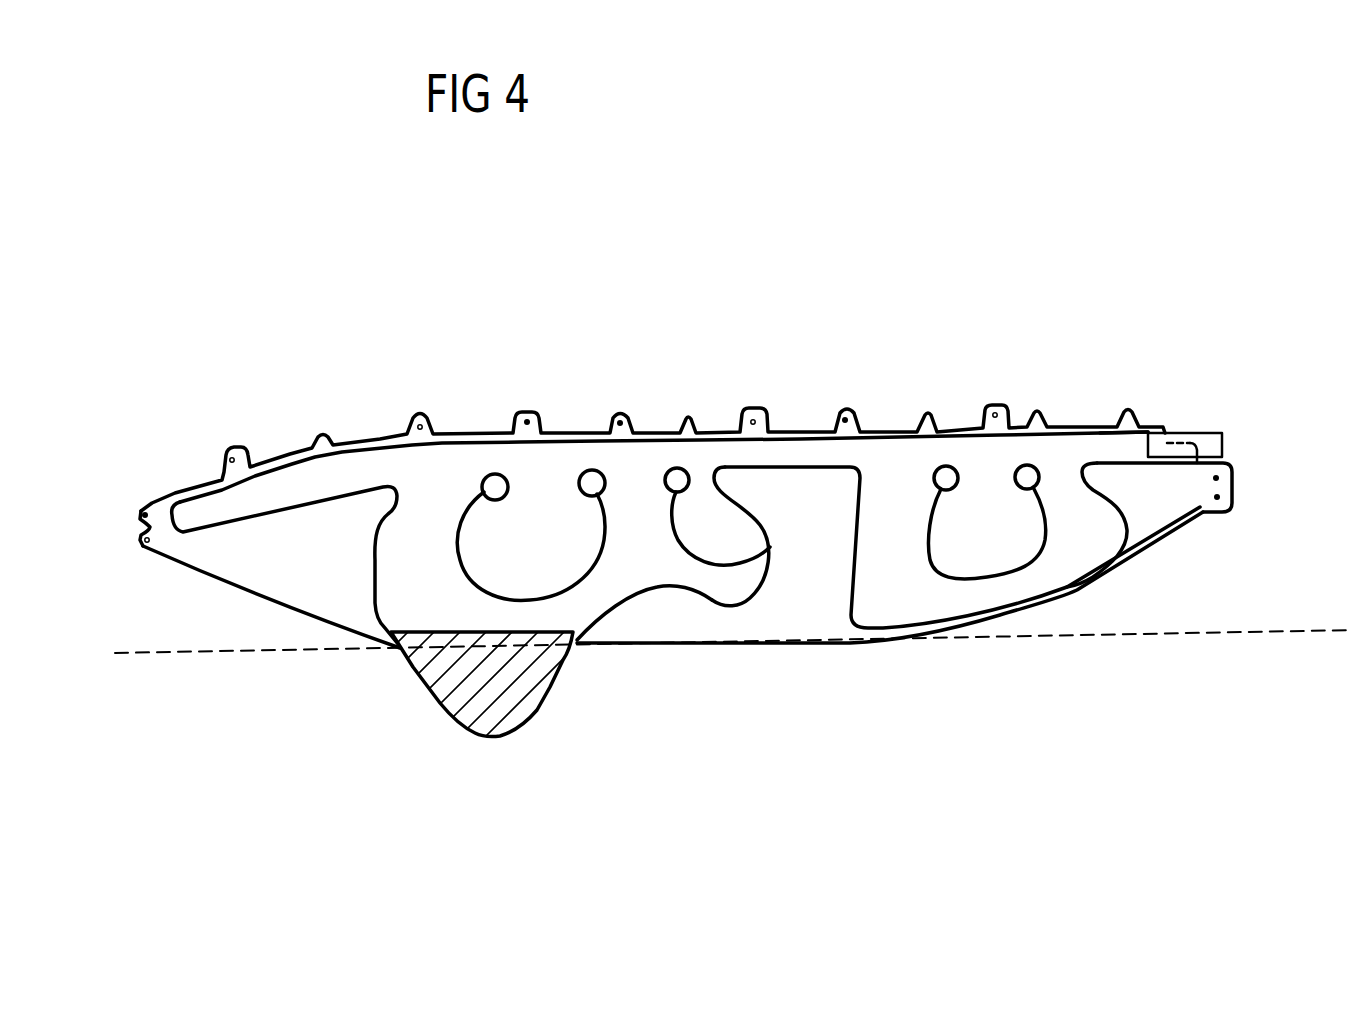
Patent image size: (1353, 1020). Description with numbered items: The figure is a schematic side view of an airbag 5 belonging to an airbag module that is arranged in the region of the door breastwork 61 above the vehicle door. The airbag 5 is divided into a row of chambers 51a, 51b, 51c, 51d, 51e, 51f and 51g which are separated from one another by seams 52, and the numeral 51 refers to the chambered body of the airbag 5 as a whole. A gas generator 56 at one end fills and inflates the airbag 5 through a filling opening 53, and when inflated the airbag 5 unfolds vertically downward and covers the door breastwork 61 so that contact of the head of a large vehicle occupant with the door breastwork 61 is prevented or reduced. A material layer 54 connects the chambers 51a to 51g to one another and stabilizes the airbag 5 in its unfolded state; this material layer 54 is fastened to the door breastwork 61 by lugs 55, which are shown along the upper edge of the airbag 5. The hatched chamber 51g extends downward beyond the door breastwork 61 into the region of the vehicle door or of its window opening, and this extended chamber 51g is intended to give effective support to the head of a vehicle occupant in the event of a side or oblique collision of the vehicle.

The airbag 5 is at (676, 510).
The frame plate 51 is at (703, 458).
The chamber 51a is at (293, 480).
The chamber 51b is at (568, 558).
The chamber 51c is at (657, 563).
The chamber 51d is at (725, 540).
The chamber 51e is at (910, 597).
The chamber 51f is at (987, 550).
The extended chamber 51g is at (505, 700).
The seam 52 is at (250, 517).
The filling opening 53 is at (1133, 447).
The material layer 54 is at (1160, 507).
The lug 55 is at (233, 462).
The gas generator 56 is at (1208, 443).
The door breastwork 61 is at (1283, 640).